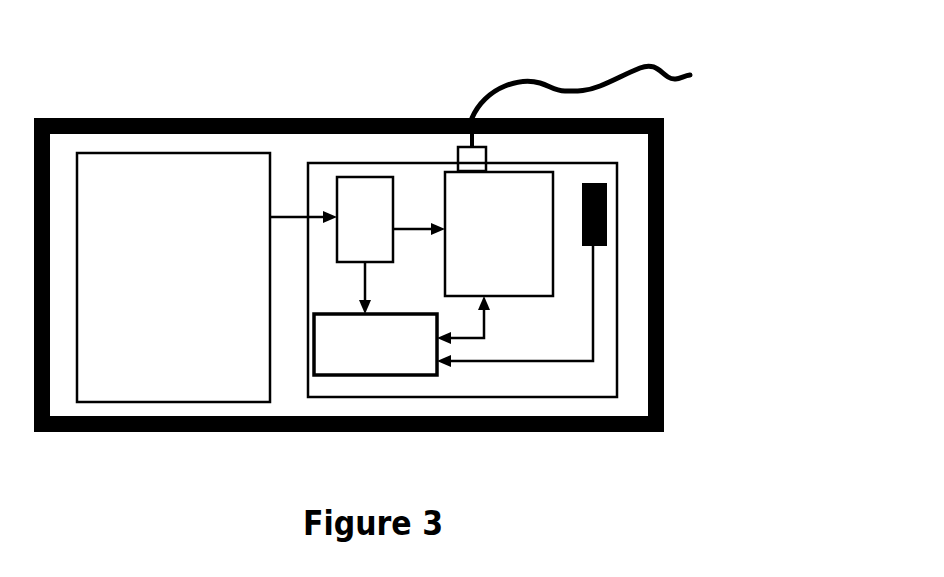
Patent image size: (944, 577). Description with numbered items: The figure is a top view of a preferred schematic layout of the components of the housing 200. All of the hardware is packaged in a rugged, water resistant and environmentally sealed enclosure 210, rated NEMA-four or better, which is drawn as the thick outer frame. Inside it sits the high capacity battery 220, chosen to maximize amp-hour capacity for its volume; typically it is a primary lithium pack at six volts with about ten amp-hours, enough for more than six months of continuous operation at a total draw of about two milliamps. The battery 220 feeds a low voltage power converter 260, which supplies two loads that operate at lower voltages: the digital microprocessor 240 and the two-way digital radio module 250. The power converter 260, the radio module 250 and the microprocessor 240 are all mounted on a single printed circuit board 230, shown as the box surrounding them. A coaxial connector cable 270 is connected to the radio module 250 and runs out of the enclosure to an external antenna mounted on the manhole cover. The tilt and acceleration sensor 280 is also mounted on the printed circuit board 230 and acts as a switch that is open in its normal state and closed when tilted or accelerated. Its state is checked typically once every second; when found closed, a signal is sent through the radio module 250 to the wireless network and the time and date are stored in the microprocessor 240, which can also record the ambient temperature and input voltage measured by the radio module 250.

The housing 200 is at (424, 268).
The enclosure 210 is at (545, 441).
The high capacity battery 220 is at (173, 277).
The printed circuit board 230 is at (557, 280).
The digital microprocessor 240 is at (375, 344).
The two-way digital radio module 250 is at (499, 234).
The low voltage power converter 260 is at (365, 219).
The coaxial connector cable 270 is at (475, 87).
The tilt and acceleration sensor 280 is at (630, 228).